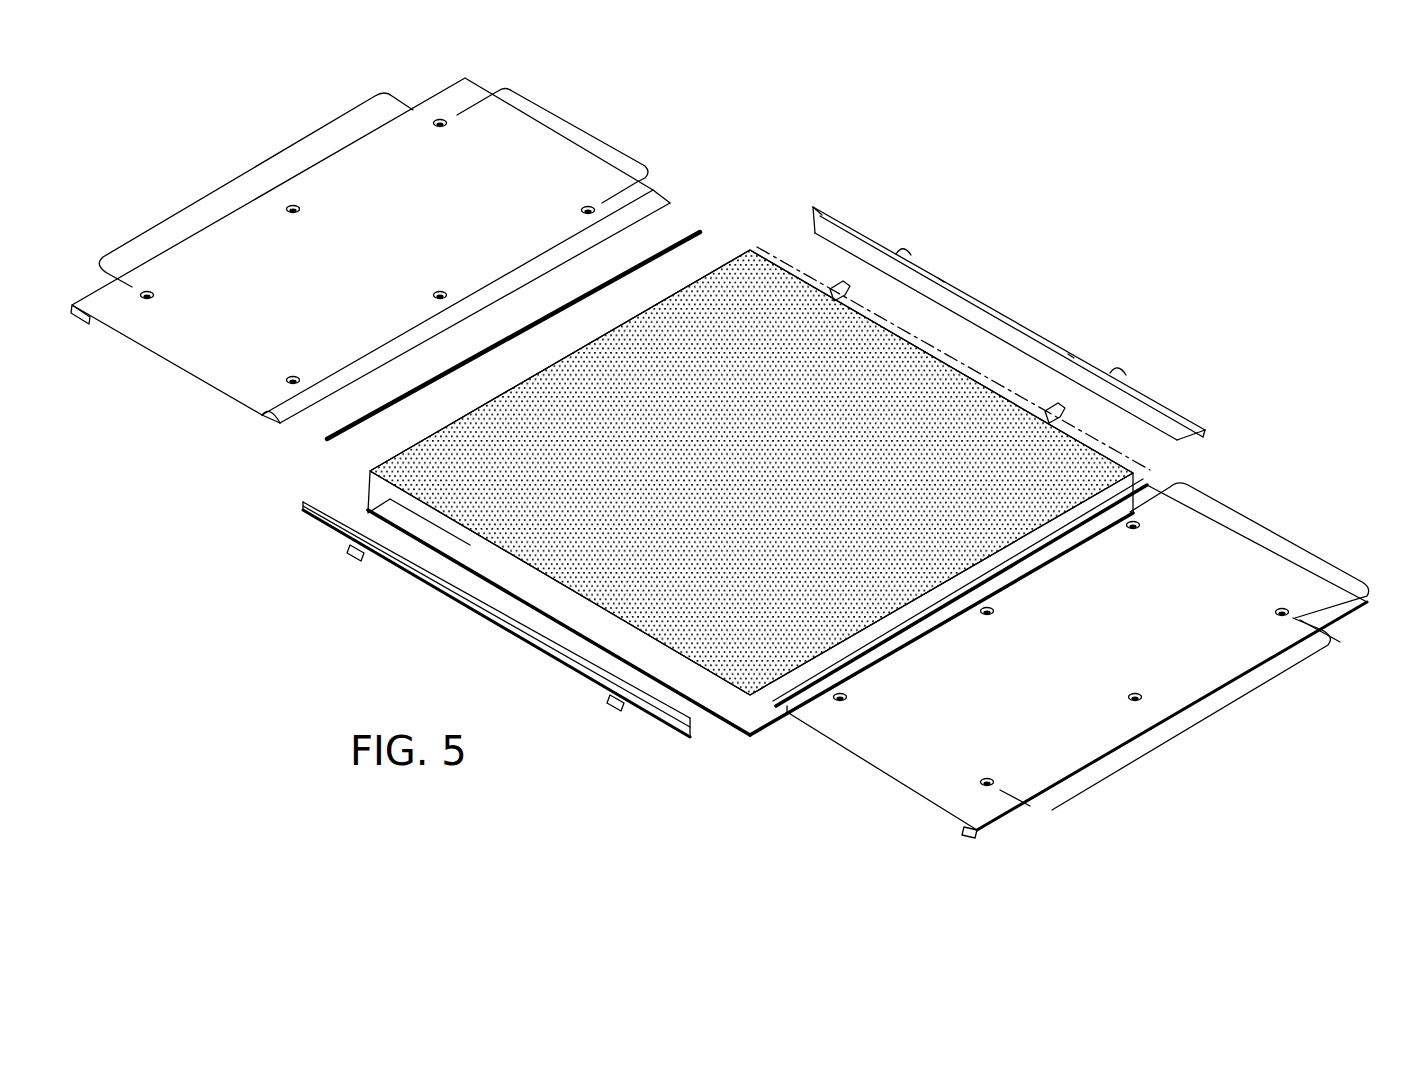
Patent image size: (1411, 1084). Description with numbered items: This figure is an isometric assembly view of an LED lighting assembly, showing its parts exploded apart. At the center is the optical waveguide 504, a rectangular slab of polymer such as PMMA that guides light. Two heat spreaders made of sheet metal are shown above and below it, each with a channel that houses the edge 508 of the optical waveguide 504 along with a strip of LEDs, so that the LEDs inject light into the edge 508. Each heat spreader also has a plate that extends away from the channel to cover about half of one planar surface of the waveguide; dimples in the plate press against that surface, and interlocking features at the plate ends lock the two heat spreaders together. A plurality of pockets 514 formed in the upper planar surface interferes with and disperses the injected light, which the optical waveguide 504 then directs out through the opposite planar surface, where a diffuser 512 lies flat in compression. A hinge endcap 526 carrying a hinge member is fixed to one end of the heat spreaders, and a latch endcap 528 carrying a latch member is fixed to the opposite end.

The optical waveguide 504 is at (720, 265).
The edge 508 is at (740, 698).
The diffuser 512 is at (773, 708).
The pockets 514 is at (680, 378).
The hinge endcap 526 is at (458, 620).
The latch endcap 528 is at (1000, 283).